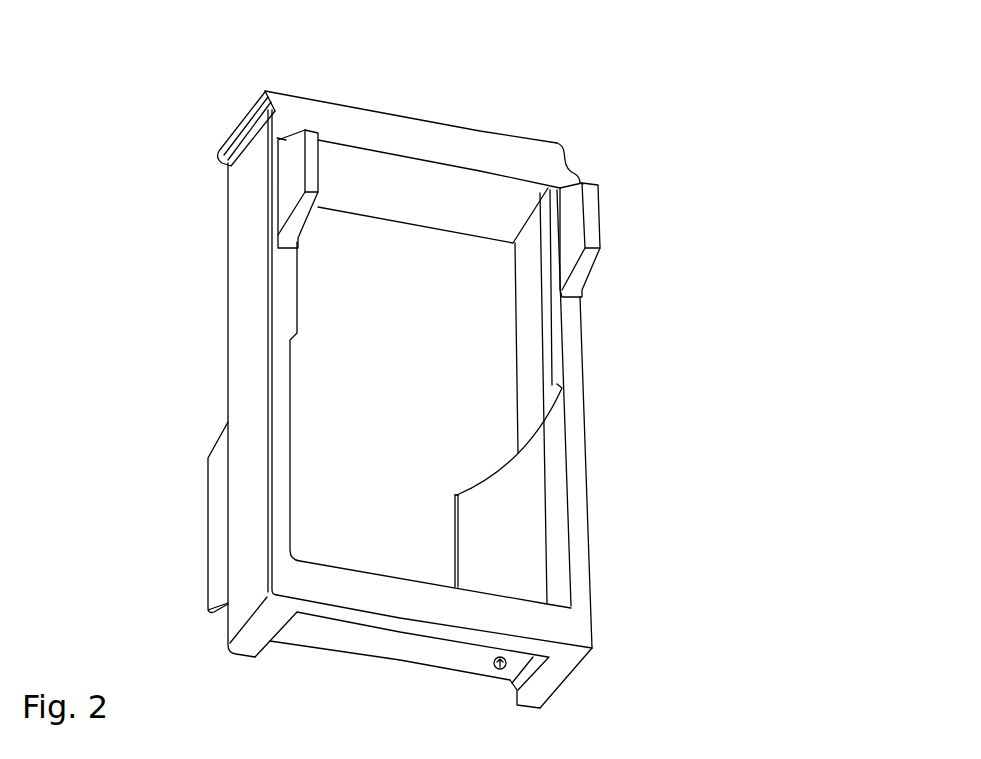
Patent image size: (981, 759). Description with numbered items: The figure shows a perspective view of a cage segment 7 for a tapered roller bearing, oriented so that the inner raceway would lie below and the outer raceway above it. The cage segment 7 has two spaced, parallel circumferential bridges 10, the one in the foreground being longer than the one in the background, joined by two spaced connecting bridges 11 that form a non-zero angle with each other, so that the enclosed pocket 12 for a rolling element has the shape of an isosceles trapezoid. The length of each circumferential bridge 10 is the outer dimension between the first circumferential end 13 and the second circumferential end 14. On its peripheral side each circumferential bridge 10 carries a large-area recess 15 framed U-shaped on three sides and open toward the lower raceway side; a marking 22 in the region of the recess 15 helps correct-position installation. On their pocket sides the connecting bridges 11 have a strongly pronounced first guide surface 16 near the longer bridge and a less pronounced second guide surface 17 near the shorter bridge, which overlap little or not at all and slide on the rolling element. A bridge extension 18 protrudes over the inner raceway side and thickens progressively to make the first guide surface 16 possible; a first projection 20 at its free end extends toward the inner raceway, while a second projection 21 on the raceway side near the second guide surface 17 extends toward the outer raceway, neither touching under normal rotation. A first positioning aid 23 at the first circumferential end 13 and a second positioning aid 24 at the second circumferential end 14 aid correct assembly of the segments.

The cage segment 7 is at (664, 680).
The circumferential bridge 10 is at (447, 105).
The connecting bridge 11 is at (201, 241).
The pocket 12 is at (392, 389).
The first circumferential end 13 is at (253, 320).
The second circumferential end 14 is at (599, 436).
The recess 15 is at (348, 642).
The first guide surface 16 is at (524, 483).
The second guide surface 17 is at (531, 368).
The bridge extension 18 is at (208, 515).
The first projection 20 is at (208, 613).
The second projection 21 is at (296, 192).
The marking 22 is at (496, 668).
The first positioning aid 23 is at (245, 125).
The second positioning aid 24 is at (567, 160).